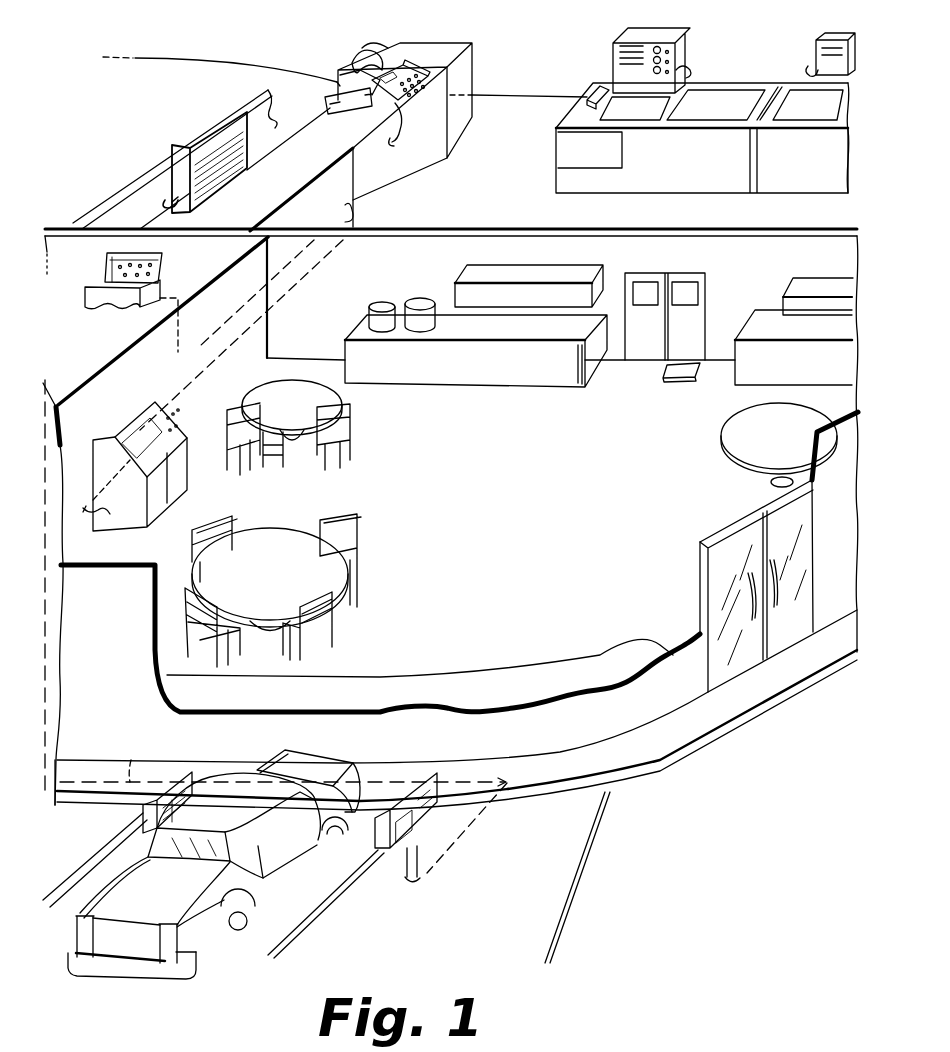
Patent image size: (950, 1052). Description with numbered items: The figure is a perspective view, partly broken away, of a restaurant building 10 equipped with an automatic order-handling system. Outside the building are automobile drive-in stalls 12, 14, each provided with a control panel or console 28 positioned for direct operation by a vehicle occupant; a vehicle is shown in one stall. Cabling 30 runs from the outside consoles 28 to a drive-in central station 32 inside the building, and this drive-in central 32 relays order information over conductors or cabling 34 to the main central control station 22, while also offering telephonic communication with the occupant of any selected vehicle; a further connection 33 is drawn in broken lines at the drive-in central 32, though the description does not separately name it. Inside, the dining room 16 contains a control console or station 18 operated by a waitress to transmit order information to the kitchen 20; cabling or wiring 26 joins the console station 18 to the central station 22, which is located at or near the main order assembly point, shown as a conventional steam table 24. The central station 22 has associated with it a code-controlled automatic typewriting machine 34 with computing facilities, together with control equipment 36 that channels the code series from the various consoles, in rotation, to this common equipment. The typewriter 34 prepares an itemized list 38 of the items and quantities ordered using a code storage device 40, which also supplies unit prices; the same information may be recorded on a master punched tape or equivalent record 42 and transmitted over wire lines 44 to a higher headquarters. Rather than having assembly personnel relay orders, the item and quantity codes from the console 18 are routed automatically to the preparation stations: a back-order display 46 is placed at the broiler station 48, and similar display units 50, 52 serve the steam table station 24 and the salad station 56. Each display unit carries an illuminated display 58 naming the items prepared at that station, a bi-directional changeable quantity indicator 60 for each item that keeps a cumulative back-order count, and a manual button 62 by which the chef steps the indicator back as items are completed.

The restaurant building 10 is at (120, 636).
The automobile drive-in stall 12 is at (313, 906).
The automobile drive-in stall 14 is at (523, 886).
The dining room 16 is at (513, 506).
The control console or station 18 is at (127, 405).
The kitchen 20 is at (512, 186).
The central control station 22 is at (322, 59).
The steam table 24 is at (333, 216).
The cabling or wiring 26 is at (205, 378).
The control panel or console 28 is at (200, 770).
The cabling 30 is at (131, 760).
The drive-in central station 32 is at (78, 321).
The register conduit 33 is at (195, 352).
The code-controlled automatic typewriting machine 34 is at (382, 62).
The control equipment 36 is at (433, 133).
The itemized list 38 is at (364, 54).
The code storage device 40 is at (472, 72).
The master punched tape or equivalent record 42 is at (332, 100).
The wire lines 44 is at (178, 60).
The back-order display 46 is at (692, 43).
The broiler station 48 is at (643, 121).
The display unit 50 is at (248, 158).
The display unit 52 is at (815, 58).
The salad station 56 is at (825, 120).
The illuminated display 58 is at (616, 50).
The bi-directional changeable quantity indicator 60 is at (655, 63).
The manual button 62 is at (678, 62).